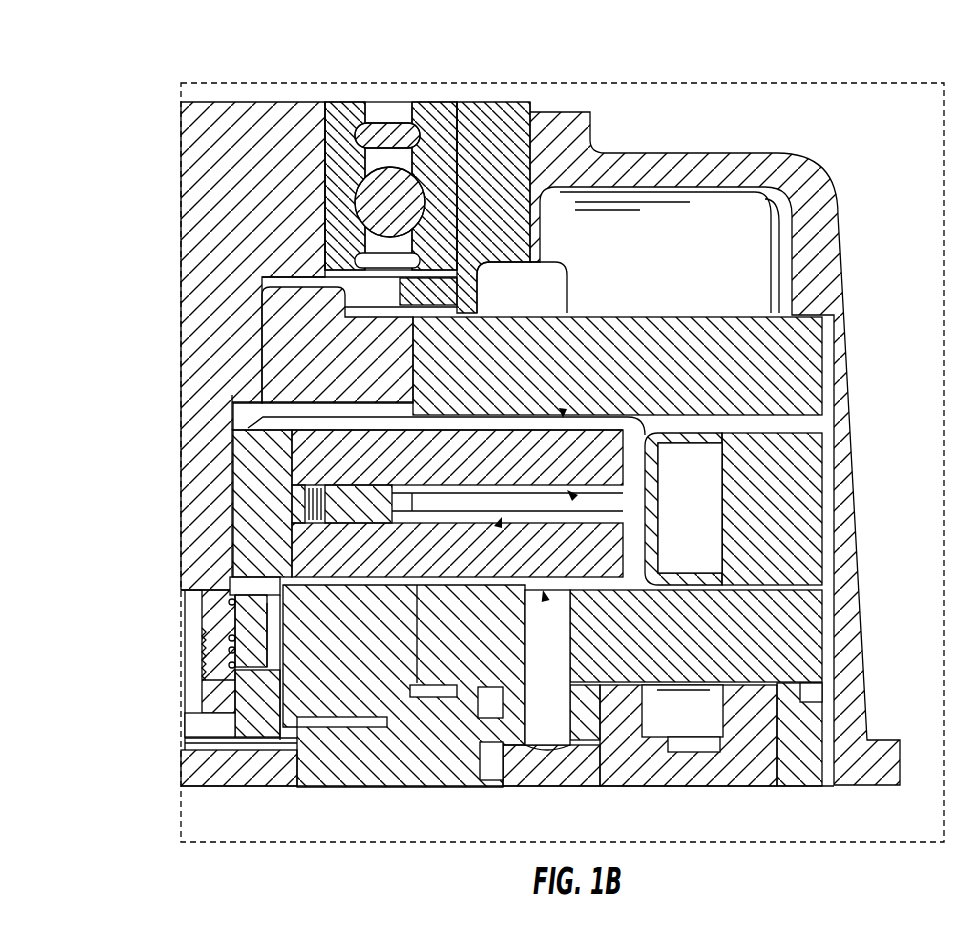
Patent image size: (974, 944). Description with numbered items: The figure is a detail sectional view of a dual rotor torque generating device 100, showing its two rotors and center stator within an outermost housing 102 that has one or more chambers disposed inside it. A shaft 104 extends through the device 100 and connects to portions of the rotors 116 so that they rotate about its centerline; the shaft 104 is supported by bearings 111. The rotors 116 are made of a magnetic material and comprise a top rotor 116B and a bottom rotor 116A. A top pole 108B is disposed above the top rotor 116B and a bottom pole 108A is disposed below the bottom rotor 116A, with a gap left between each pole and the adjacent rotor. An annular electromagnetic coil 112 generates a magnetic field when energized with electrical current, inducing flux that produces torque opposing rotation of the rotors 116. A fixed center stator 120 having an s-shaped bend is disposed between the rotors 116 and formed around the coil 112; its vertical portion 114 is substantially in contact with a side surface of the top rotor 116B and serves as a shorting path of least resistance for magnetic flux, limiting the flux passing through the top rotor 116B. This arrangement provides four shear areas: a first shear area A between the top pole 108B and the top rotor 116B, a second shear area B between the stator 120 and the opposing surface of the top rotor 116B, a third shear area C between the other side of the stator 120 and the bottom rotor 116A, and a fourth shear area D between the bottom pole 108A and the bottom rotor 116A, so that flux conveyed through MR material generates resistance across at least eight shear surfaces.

The dual rotor torque generating device 100 is at (140, 118).
The housing 102 is at (840, 296).
The shaft 104 is at (197, 533).
The bottom pole 108A is at (767, 632).
The top pole 108B is at (770, 361).
The bearings 111 is at (407, 196).
The electromagnetic coil 112 is at (698, 462).
The vertical portion 114 is at (633, 458).
The rotors 116 is at (263, 470).
The bottom rotor 116A is at (410, 545).
The top rotor 116B is at (421, 470).
The stator 120 is at (618, 498).
The first shear area A is at (563, 415).
The second shear area B is at (567, 492).
The third shear area C is at (497, 522).
The fourth shear area D is at (543, 592).